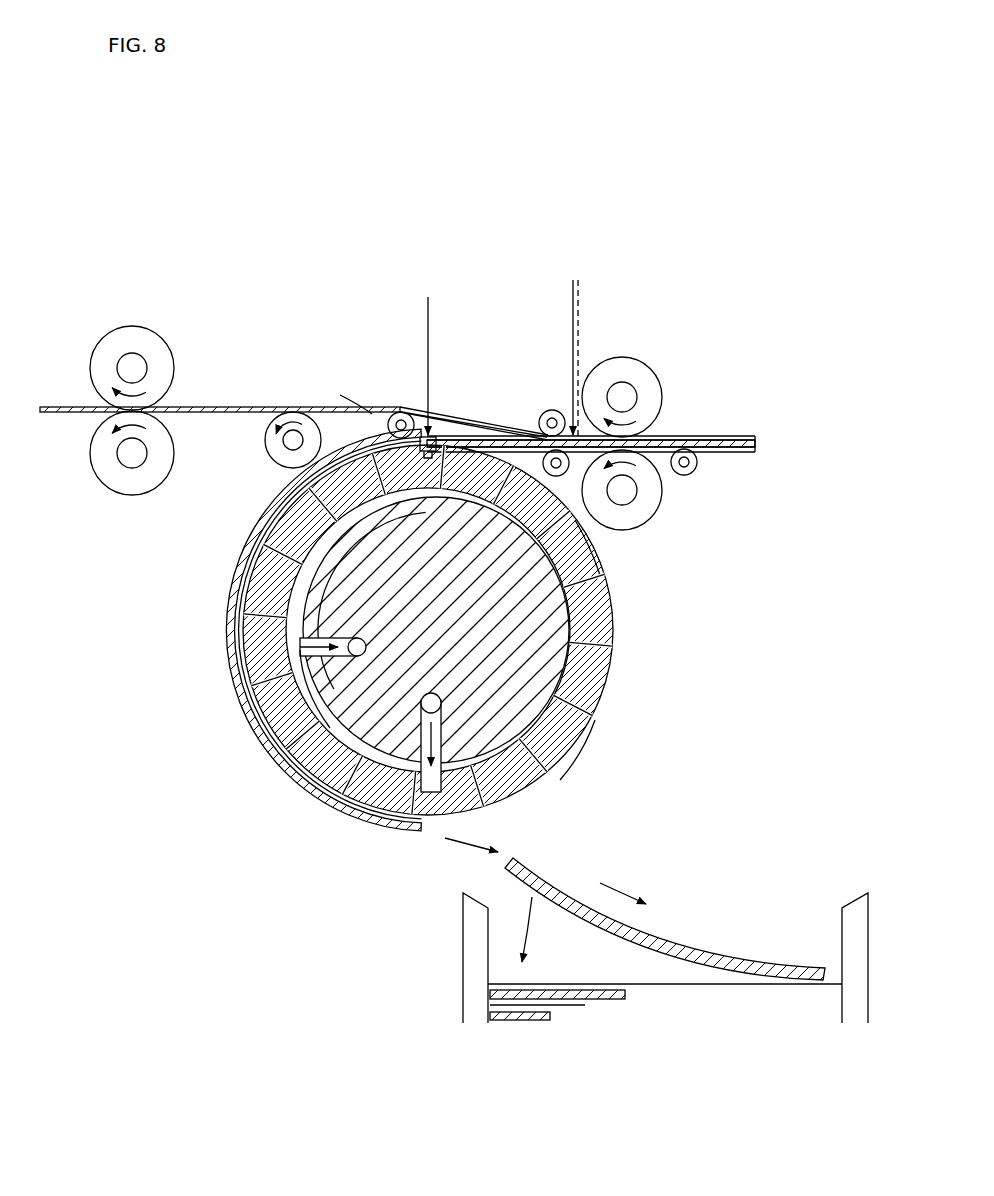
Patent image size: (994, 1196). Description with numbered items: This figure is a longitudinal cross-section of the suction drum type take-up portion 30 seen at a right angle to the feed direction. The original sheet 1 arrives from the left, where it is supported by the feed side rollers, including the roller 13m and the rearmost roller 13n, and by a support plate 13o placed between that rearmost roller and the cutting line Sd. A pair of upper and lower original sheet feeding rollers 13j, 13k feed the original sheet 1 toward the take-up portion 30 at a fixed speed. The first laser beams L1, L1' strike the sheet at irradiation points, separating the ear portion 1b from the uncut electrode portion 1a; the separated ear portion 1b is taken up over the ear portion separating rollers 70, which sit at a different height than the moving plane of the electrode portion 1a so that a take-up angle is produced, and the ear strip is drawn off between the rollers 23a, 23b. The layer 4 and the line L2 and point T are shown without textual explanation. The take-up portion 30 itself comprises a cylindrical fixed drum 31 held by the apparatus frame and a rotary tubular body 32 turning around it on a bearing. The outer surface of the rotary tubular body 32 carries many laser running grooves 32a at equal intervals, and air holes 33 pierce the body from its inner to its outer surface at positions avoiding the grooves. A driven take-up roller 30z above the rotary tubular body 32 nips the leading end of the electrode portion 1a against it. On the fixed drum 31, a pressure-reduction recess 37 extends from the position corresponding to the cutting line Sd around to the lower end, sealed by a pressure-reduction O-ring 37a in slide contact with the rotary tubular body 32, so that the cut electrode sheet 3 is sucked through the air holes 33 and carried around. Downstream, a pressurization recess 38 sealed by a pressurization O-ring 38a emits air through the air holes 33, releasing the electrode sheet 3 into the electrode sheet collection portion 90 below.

The original sheet 1 is at (742, 428).
The electrode portion 1a is at (680, 437).
The ear portion 1b is at (218, 406).
The adhesive layer 4 is at (720, 440).
The electrode sheet 3 is at (228, 570).
The upper conveying roller 23a is at (107, 352).
The lower conveying roller 23b is at (113, 478).
The ear portion separating roller 70 is at (262, 442).
The take-up portion 30 is at (418, 405).
The take-up roller 30z is at (396, 412).
The fixed drum 31 is at (535, 682).
The rotary tubular body 32 is at (604, 640).
The laser running groove 32a is at (555, 760).
The air hole 33 is at (240, 698).
The pressure-reduction recess 37 is at (236, 641).
The pressure-reduction O-ring 37a is at (378, 826).
The pressurization recess 38 is at (432, 830).
The pressurization O-ring 38a is at (522, 770).
The original sheet feeding roller 13j is at (638, 386).
The original sheet feeding roller 13k is at (652, 490).
The feed side roller 13m is at (552, 410).
The feed side roller 13n is at (566, 475).
The support plate 13o is at (593, 548).
The electrode sheet collection portion 90 is at (445, 968).
The first laser beam L1 is at (545, 338).
The first laser beam L1' is at (606, 339).
The line L2 is at (432, 325).
The tangent point T is at (348, 408).
The cutting line Sd is at (452, 412).